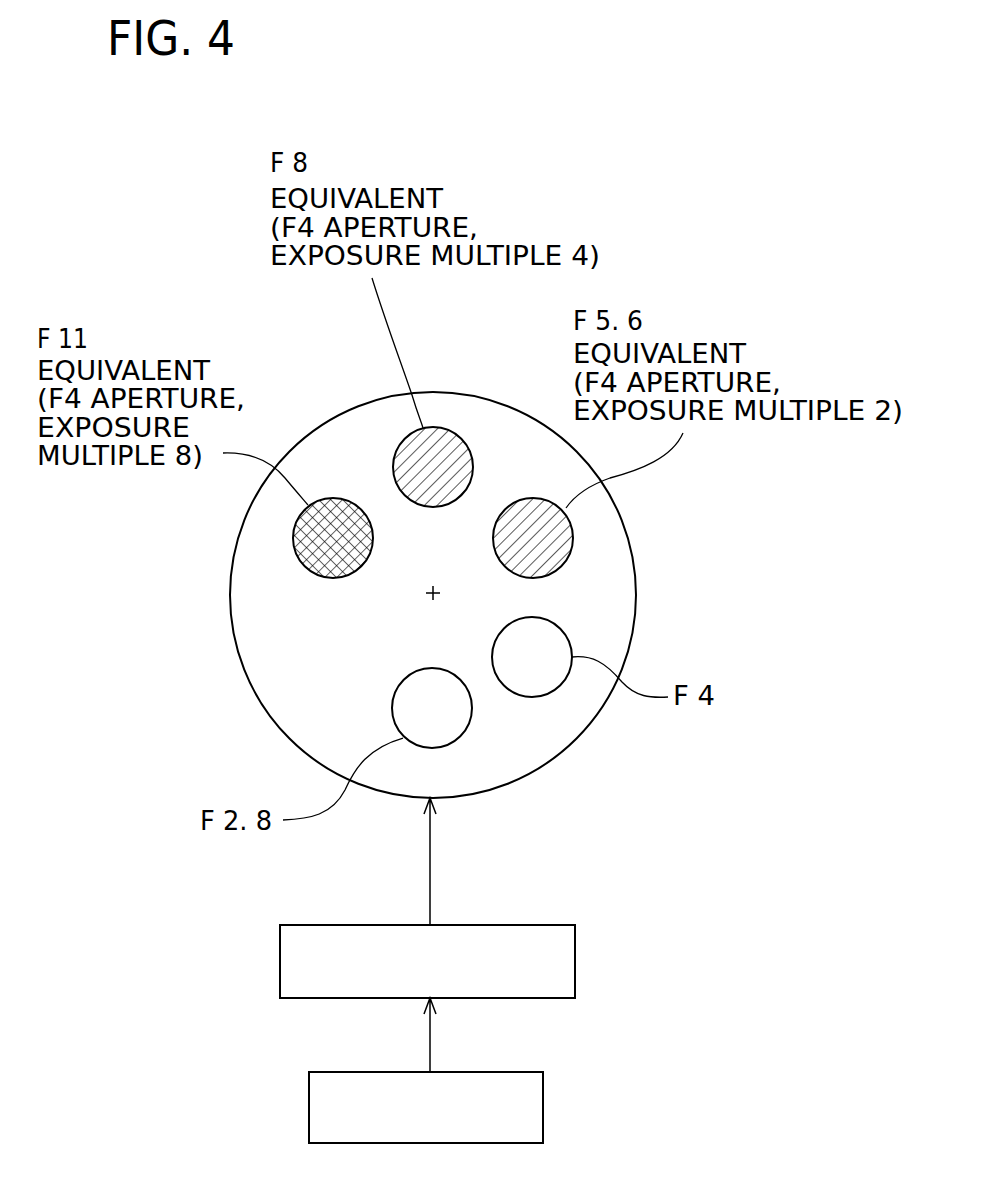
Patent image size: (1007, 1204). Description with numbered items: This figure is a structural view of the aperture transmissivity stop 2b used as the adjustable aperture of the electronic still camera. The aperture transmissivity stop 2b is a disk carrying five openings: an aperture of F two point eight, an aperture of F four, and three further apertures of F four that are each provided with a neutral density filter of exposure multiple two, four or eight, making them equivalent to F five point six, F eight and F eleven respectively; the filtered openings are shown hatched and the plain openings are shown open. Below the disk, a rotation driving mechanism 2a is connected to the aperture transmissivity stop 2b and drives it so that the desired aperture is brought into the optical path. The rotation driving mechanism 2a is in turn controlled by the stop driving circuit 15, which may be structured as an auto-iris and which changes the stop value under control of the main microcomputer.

The rotation driving mechanism 2a is at (280, 958).
The aperture transmissivity stop 2b is at (543, 767).
The stop driving circuit 15 is at (309, 1097).